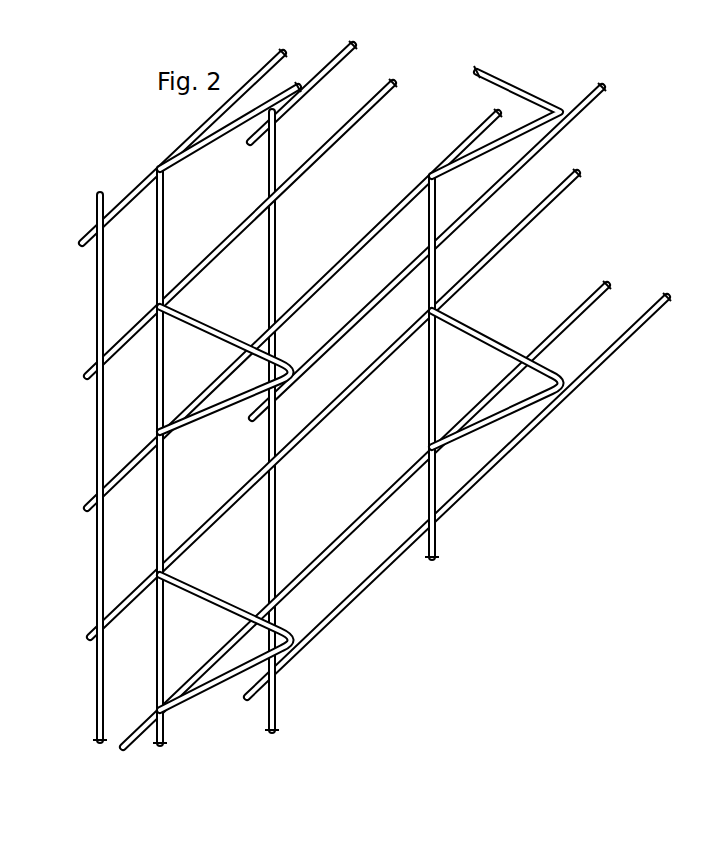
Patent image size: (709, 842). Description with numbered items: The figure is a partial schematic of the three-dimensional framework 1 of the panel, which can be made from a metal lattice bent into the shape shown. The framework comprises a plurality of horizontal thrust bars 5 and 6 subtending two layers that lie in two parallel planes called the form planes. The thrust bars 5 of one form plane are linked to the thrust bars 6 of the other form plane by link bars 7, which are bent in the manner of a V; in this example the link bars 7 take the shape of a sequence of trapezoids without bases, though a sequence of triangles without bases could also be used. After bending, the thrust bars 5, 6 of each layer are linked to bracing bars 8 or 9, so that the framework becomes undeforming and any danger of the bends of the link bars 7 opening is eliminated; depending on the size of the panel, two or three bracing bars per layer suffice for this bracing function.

The reinforcing cage structure 1 is at (74, 443).
The horizontal thrust bar 5 is at (142, 178).
The horizontal thrust bar 6 is at (373, 294).
The link bar 7 is at (232, 336).
The bracing bar 8 is at (98, 318).
The bracing bar 9 is at (274, 533).